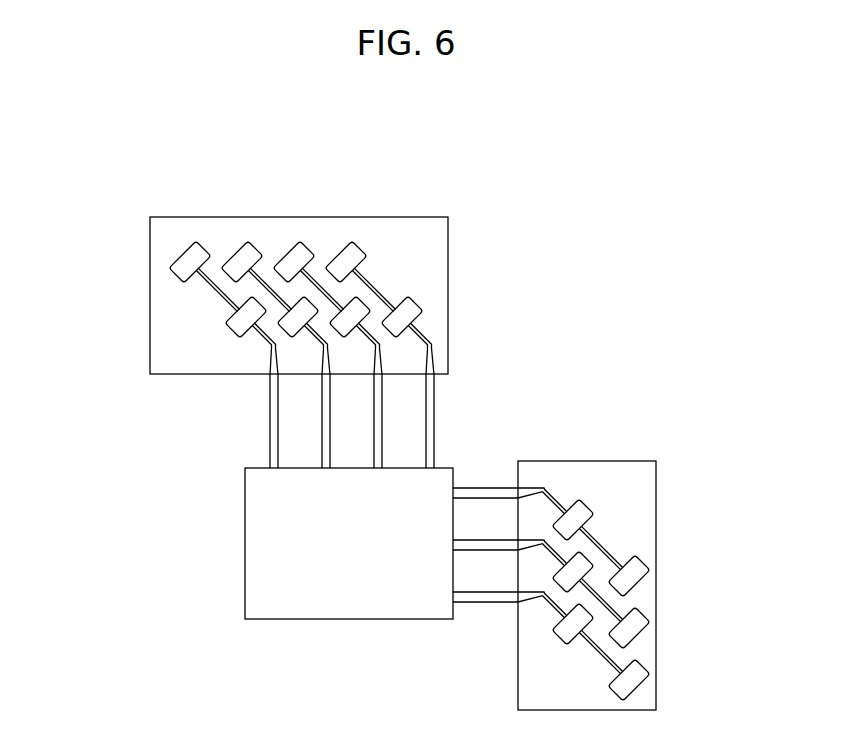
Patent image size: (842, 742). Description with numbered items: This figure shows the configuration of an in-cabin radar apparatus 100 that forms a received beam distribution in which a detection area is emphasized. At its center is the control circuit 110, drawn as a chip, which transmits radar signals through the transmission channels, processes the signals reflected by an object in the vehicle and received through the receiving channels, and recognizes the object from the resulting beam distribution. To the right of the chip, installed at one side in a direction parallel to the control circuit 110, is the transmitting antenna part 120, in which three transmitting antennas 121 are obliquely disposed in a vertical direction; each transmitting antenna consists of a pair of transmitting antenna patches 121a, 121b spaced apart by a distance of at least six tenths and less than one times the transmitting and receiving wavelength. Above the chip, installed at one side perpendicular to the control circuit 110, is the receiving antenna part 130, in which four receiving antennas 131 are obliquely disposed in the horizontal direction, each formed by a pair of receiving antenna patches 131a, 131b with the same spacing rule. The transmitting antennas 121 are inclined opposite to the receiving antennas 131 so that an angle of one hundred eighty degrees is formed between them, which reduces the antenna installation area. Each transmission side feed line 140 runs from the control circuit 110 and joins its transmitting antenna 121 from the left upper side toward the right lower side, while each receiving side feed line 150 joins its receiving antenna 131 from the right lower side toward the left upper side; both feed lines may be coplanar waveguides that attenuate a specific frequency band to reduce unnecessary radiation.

The in-cabin radar apparatus 100 is at (524, 320).
The control circuit 110 is at (245, 543).
The transmitting antenna part 120 is at (657, 470).
The transmitting antennas 121 is at (738, 502).
The transmitting antenna patch 121a is at (588, 505).
The transmitting antenna patch 121b is at (647, 561).
The receiving antenna part 130 is at (150, 243).
The receiving antennas 131 is at (86, 268).
The receiving antenna patch 131a is at (226, 326).
The receiving antenna patch 131b is at (171, 279).
The transmission side feed line 140 is at (483, 603).
The receiving side feed line 150 is at (268, 420).